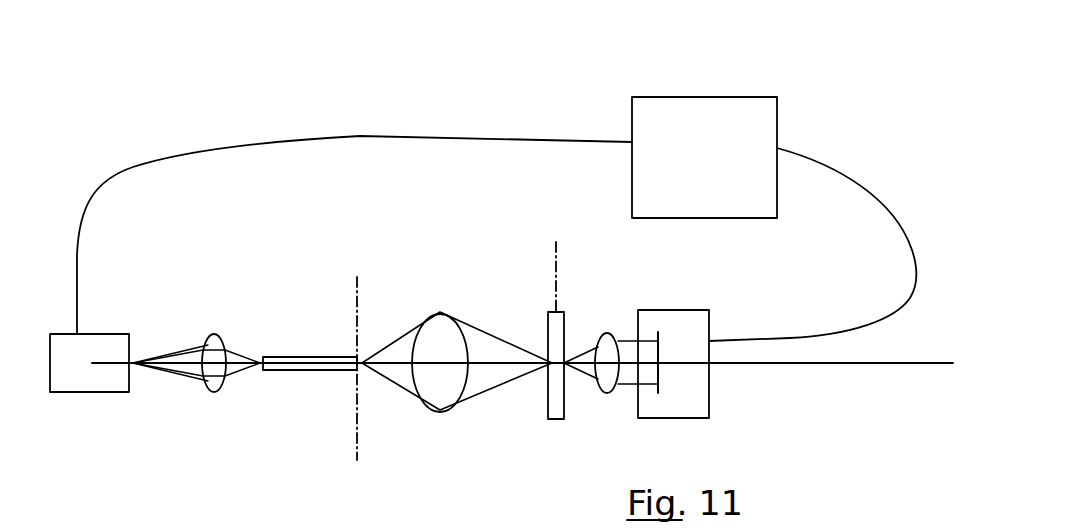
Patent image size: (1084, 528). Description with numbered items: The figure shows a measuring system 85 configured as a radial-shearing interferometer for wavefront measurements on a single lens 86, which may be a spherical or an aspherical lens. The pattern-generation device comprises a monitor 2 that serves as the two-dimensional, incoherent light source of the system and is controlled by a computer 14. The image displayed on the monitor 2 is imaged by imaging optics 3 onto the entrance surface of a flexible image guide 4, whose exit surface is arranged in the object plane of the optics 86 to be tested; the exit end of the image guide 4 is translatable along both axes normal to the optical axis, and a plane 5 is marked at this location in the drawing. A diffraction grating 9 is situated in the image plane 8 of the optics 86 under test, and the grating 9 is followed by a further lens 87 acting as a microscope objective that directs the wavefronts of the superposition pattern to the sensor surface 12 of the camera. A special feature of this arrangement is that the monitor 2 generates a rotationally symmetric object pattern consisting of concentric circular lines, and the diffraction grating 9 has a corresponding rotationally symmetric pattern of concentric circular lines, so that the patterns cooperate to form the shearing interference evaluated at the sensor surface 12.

The measuring arrangement 85 is at (263, 88).
The computer 14 is at (722, 110).
The monitor 2 is at (83, 394).
The imaging optics 3 is at (215, 393).
The flexible image guide 4 is at (313, 371).
The reference plane 5 is at (358, 287).
The single lens 86 is at (440, 398).
The image plane 8 is at (553, 260).
The diffraction grating 9 is at (558, 420).
The collecting lens 87 is at (610, 333).
The sensor surface 12 is at (660, 375).